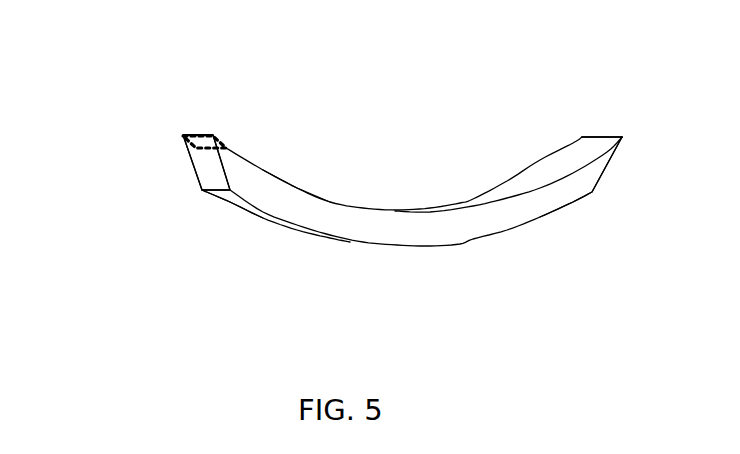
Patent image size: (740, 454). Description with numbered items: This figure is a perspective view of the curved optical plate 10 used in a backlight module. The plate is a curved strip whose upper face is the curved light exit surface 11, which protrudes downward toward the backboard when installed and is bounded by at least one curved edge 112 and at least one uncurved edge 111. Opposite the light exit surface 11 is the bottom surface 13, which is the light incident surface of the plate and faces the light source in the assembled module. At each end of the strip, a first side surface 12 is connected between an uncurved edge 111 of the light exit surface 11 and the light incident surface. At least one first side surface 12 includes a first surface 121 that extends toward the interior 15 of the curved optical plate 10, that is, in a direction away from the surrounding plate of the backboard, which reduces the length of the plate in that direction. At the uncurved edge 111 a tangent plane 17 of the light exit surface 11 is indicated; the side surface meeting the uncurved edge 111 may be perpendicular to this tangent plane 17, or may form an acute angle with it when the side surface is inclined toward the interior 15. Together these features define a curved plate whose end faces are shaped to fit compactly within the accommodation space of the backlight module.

The curved optical plate 10 is at (143, 31).
The curved light exit surface 11 is at (503, 190).
The uncurved edge 111 is at (198, 135).
The curved edge 112 is at (560, 180).
The first side surface 12 is at (203, 163).
The first surface 121 is at (206, 162).
The bottom surface 13 is at (227, 205).
The interior 15 is at (328, 219).
The tangent plane 17 is at (210, 134).